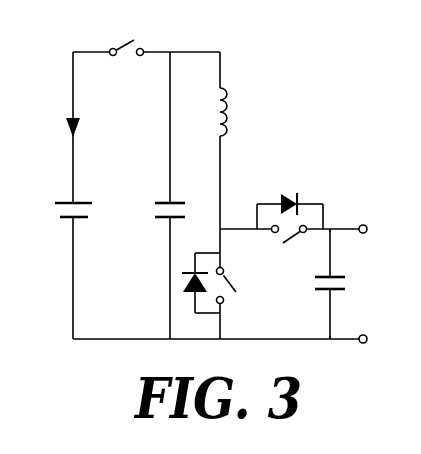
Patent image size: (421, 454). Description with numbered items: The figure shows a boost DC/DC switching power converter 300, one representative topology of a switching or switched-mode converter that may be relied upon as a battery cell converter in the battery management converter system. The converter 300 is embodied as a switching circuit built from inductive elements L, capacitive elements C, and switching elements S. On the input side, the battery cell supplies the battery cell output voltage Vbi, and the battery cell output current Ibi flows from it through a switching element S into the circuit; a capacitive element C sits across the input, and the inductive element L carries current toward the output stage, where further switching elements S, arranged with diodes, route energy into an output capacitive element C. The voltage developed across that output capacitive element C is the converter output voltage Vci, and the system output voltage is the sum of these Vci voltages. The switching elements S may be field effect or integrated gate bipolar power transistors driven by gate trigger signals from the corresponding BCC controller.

The boost DC/DC switching power converter 300 is at (48, 43).
The switching element S is at (208, 167).
The capacitive element C is at (253, 233).
The inductive element L is at (234, 112).
The battery cell output voltage Vbi is at (90, 213).
The battery cell output current Ibi is at (86, 129).
The output voltage of the battery cell converter Vci is at (362, 284).